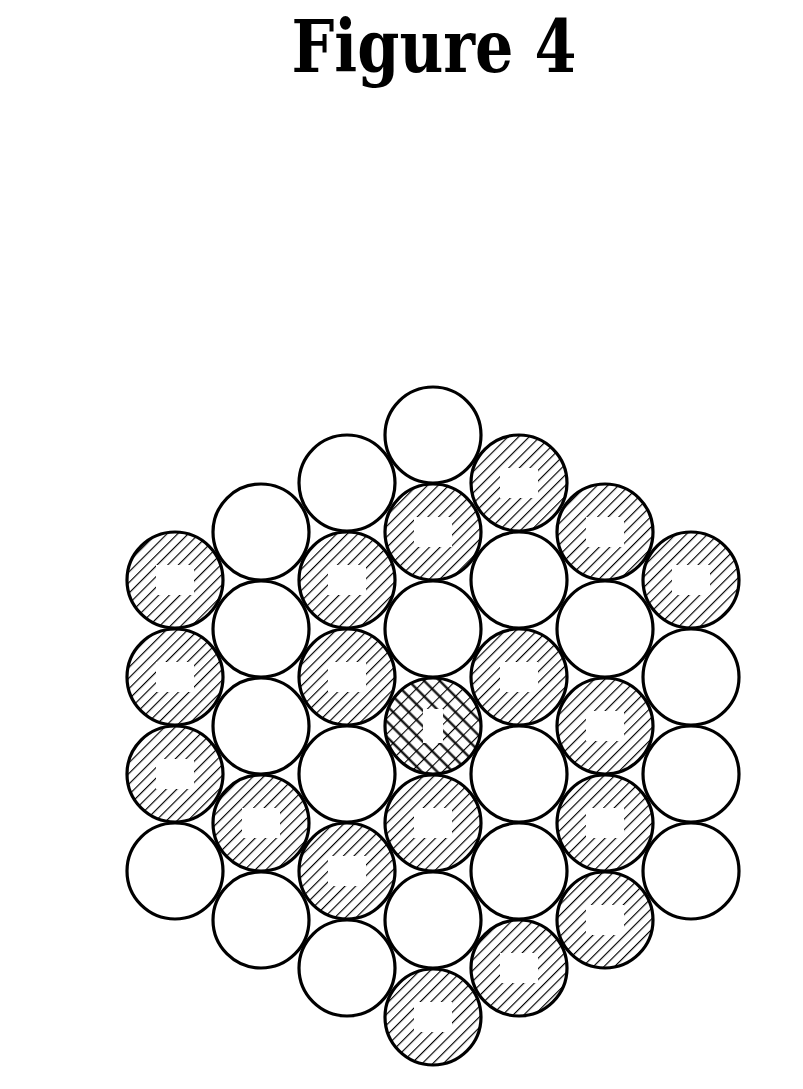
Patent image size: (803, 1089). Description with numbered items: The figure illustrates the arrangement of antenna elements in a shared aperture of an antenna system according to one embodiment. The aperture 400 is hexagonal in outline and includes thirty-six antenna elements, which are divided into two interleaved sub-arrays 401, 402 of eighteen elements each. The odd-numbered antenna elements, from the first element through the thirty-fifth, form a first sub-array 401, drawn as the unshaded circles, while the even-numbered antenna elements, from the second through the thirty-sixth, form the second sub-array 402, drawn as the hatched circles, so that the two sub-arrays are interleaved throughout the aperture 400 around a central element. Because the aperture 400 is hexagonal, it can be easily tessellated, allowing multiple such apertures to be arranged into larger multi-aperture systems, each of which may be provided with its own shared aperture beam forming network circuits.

The aperture 400 is at (86, 429).
The first sub-array 401 is at (125, 873).
The sub-array 402 is at (123, 586).